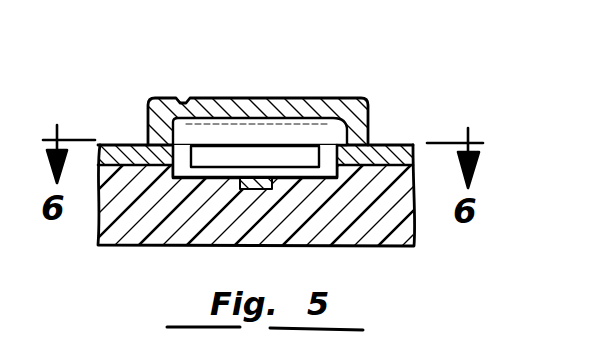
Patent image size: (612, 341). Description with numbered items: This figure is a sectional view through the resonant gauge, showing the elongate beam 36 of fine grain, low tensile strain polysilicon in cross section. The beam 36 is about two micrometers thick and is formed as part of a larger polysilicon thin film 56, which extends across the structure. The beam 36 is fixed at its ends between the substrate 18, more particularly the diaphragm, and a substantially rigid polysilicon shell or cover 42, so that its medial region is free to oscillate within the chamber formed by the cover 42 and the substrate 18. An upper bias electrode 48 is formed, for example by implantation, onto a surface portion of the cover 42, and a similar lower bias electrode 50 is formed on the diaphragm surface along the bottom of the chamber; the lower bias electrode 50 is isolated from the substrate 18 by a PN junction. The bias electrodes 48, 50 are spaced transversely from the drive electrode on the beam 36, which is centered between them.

The substrate 18 is at (405, 220).
The elongate beam 36 is at (300, 146).
The cover 42 is at (291, 118).
The upper bias electrode 48 is at (253, 98).
The lower bias electrode 50 is at (256, 191).
The polysilicon thin film 56 is at (403, 152).